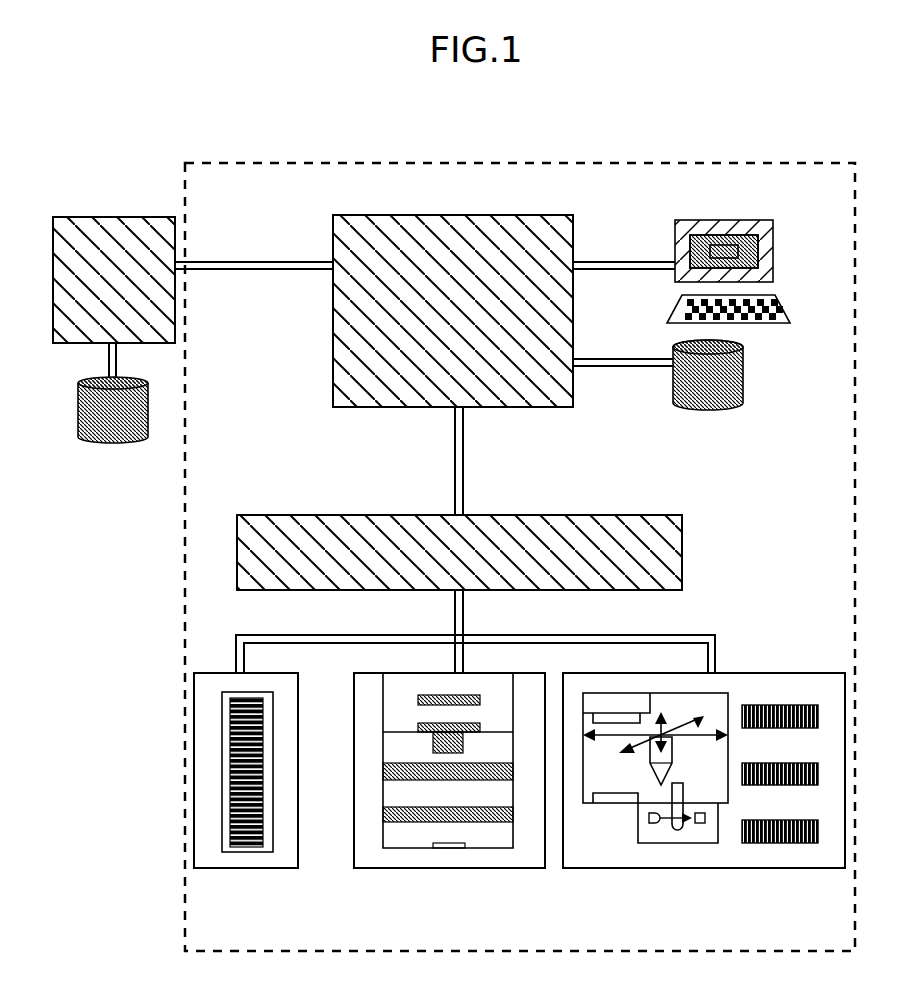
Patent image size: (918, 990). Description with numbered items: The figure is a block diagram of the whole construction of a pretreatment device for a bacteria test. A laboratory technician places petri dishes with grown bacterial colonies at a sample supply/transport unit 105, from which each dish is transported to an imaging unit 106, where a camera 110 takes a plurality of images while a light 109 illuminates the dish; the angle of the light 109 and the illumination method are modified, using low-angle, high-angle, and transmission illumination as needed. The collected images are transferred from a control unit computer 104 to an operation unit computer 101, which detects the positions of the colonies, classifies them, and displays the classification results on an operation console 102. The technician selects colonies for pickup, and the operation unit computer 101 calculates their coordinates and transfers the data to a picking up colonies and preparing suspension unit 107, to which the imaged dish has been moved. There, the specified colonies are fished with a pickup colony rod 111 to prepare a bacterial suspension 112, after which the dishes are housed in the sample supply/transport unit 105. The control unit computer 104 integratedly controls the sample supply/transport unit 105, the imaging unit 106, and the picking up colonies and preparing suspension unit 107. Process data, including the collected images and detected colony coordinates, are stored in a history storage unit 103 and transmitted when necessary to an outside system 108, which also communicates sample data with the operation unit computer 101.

The operation unit computer 101 is at (453, 365).
The operation console 102 is at (773, 246).
The history storage unit 103 is at (743, 378).
The control unit computer 104 is at (475, 594).
The sample supply/transport unit 105 is at (247, 870).
The imaging unit 106 is at (426, 779).
The picking up colonies and preparing suspension unit 107 is at (704, 770).
The outside system 108 is at (193, 330).
The light 109 is at (395, 768).
The camera 110 is at (493, 707).
The pickup colony rod 111 is at (667, 755).
The bacterial suspension 112 is at (813, 698).